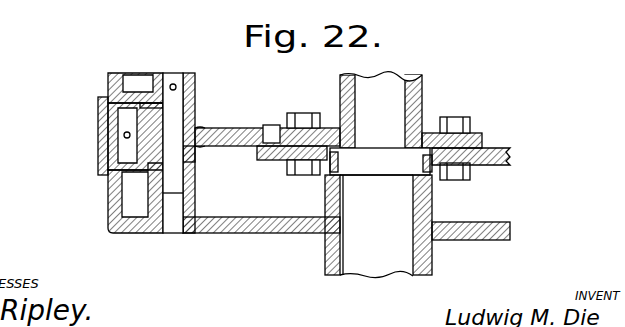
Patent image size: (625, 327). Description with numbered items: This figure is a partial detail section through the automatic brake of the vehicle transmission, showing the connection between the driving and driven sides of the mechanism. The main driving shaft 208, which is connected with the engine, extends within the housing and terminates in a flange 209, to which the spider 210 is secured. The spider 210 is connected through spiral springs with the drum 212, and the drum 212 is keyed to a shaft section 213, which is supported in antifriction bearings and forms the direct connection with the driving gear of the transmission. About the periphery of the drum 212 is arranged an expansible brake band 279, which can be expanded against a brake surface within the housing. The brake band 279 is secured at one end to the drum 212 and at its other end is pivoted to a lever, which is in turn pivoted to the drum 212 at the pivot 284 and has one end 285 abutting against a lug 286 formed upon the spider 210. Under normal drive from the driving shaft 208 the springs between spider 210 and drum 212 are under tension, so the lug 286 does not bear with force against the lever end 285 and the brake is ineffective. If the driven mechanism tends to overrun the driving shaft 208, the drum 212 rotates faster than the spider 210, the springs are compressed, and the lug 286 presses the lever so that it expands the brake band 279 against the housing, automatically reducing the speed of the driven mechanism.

The main driving shaft 208 is at (382, 95).
The flange 209 is at (482, 135).
The spider 210 is at (503, 163).
The drum 212 is at (213, 237).
The shaft section 213 is at (378, 253).
The expansible brake band 279 is at (98, 137).
The pivot of lever on drum 284 is at (173, 83).
The end of lever 285 is at (237, 128).
The lug 286 is at (272, 125).